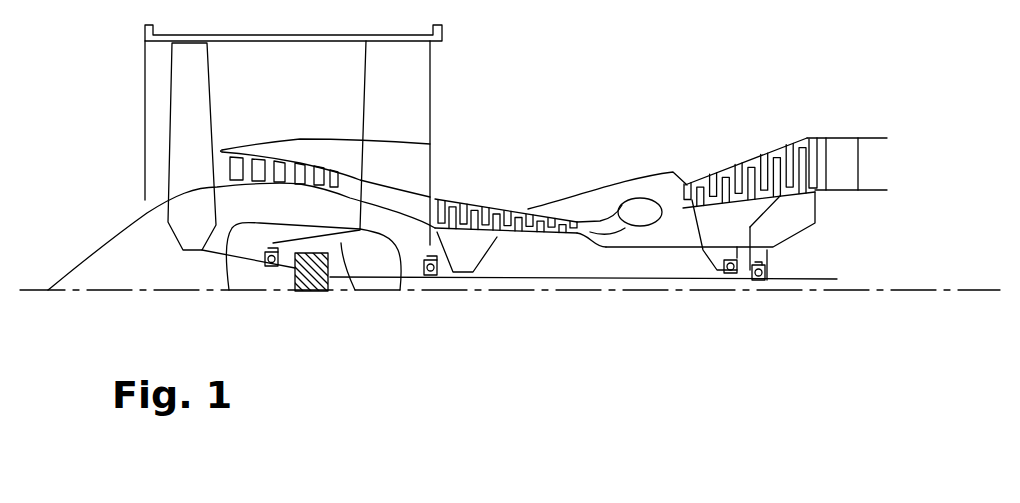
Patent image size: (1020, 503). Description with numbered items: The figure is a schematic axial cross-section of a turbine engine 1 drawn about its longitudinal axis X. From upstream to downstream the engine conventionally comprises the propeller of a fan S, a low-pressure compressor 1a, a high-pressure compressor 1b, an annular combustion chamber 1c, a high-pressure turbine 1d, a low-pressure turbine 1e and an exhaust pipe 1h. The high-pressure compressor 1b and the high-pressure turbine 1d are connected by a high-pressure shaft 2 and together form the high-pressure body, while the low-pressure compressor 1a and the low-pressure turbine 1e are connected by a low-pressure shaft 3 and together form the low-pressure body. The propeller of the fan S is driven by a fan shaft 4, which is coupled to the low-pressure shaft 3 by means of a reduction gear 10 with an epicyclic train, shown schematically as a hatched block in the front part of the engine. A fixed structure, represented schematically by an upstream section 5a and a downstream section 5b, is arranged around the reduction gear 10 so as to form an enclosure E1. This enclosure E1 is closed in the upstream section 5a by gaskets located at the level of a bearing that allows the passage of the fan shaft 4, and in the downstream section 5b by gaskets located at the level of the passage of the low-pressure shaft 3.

The turbine engine 1 is at (554, 115).
The low-pressure compressor 1a is at (247, 155).
The high-pressure compressor 1b is at (468, 198).
The annular combustion chamber 1c is at (637, 210).
The high-pressure turbine 1d is at (687, 190).
The low-pressure turbine 1e is at (813, 157).
The exhaust pipe 1h is at (870, 160).
The fan S is at (183, 97).
The high-pressure shaft 2 is at (630, 250).
The low-pressure shaft 3 is at (532, 280).
The fan shaft 4 is at (254, 268).
The upstream section 5a is at (229, 290).
The downstream section 5b is at (400, 290).
The reduction gear 10 is at (307, 272).
The enclosure E1 is at (355, 290).
The longitudinal axis X is at (31, 292).